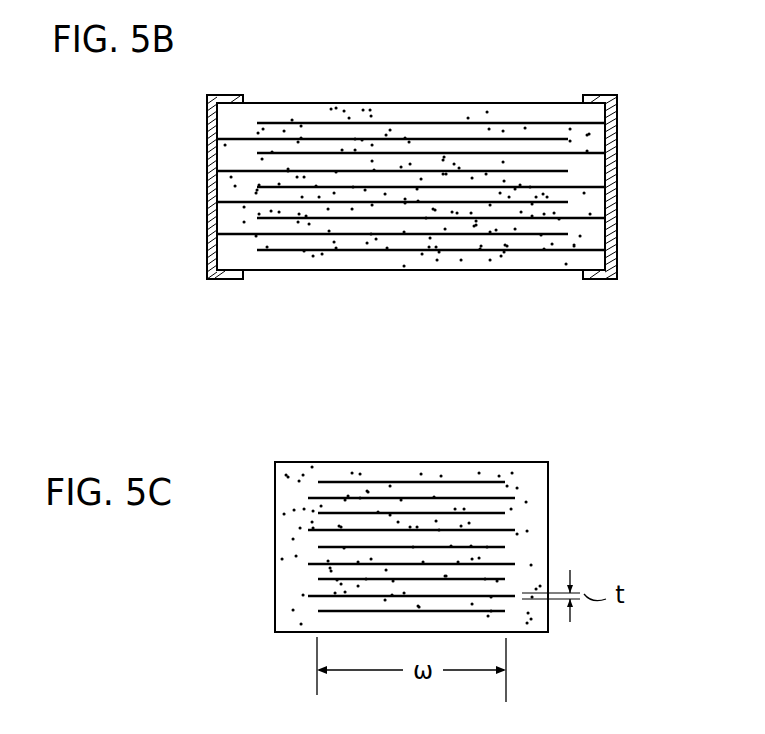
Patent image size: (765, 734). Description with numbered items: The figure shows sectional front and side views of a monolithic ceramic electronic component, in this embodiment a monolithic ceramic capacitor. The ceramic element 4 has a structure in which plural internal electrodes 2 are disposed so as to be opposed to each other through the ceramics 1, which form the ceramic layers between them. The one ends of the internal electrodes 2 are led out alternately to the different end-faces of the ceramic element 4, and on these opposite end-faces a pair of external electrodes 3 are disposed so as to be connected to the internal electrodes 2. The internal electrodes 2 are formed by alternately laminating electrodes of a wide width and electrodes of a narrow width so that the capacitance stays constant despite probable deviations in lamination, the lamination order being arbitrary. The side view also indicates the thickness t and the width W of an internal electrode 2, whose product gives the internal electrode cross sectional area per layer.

In FIG. 5B, the ceramics (ceramic layer) 1 is at (410, 178).
In FIG. 5C, the ceramics (ceramic layer) 1 is at (357, 538).
In FIG. 5B, the internal electrode 2 is at (523, 137).
In FIG. 5C, the internal electrode 2 is at (478, 505).
In FIG. 5B, the external electrode 3 is at (210, 178).
In FIG. 5B, the ceramic element 4 is at (345, 100).
In FIG. 5C, the ceramic element 4 is at (406, 458).